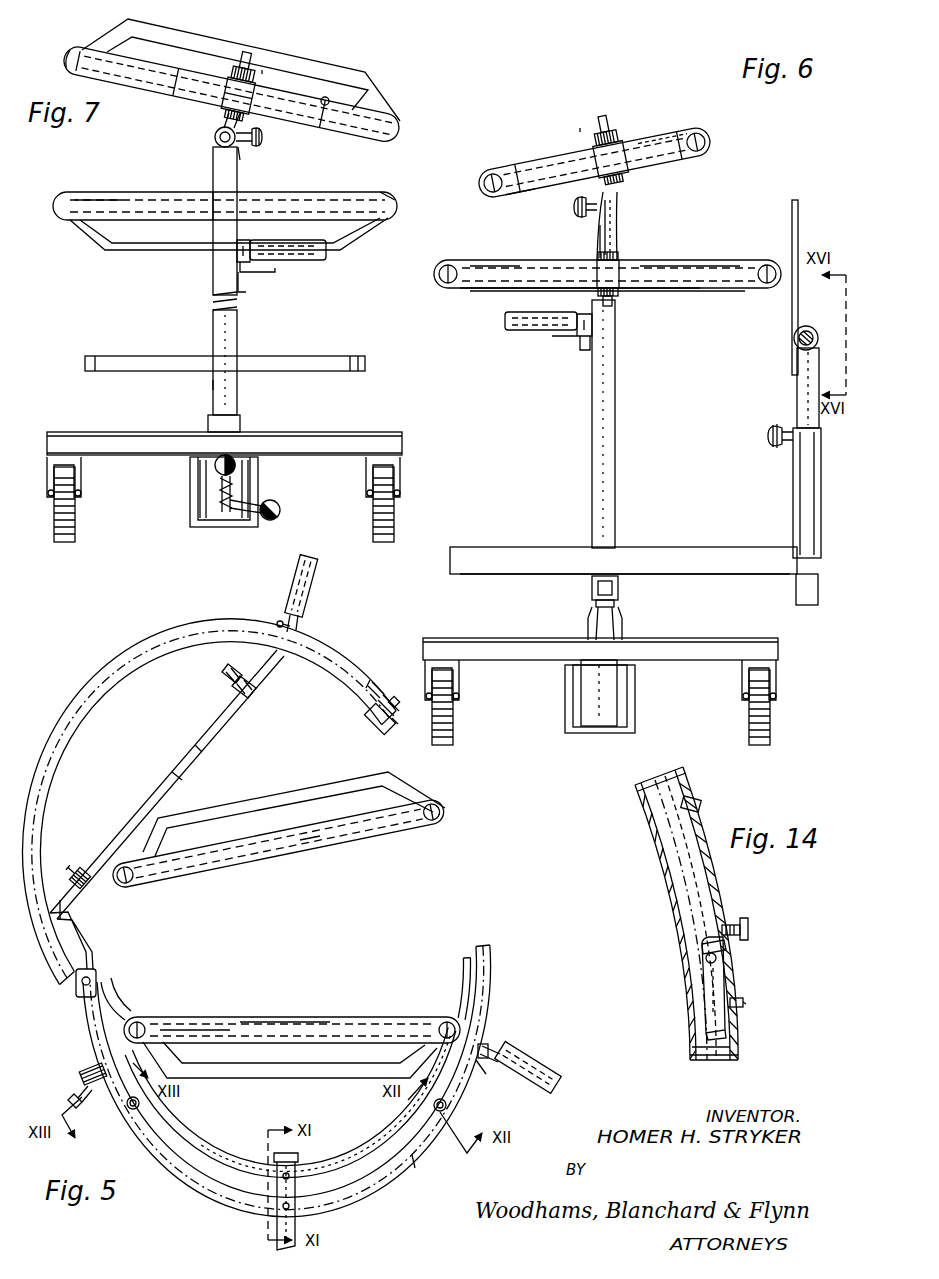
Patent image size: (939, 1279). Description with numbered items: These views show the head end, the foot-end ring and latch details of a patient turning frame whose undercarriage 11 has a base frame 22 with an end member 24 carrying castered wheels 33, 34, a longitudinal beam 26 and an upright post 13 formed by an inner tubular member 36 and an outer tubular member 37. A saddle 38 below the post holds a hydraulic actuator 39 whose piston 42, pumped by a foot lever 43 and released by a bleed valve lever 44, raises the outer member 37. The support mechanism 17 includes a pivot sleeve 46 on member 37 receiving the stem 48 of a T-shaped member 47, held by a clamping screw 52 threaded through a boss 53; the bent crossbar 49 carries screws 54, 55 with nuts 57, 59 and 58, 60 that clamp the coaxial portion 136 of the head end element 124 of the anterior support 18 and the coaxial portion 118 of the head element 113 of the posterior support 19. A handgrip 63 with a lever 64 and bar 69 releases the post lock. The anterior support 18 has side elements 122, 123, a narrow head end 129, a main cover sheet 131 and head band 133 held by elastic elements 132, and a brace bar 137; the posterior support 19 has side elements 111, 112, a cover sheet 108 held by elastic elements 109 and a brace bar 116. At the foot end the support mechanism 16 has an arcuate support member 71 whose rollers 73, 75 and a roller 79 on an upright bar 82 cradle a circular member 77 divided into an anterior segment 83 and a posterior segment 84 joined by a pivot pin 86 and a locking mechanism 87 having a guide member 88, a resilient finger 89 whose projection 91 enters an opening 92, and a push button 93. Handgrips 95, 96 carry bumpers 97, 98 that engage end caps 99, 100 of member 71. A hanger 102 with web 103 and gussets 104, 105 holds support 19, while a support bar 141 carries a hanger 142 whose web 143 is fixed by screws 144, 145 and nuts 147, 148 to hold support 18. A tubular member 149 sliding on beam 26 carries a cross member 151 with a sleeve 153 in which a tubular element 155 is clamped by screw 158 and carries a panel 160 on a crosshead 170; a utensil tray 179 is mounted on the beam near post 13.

In FIG. 7, the undercarriage 11 is at (116, 520).
In FIG. 7, the upright post 13 is at (240, 388).
In FIG. 6, the upright post 13 is at (590, 412).
In FIG. 5, the support mechanism 16 is at (85, 682).
In FIG. 7, the support mechanism 17 is at (264, 72).
In FIG. 6, the support mechanism 17 is at (578, 129).
In FIG. 7, the anterior patient support 18 is at (410, 124).
In FIG. 6, the anterior patient support 18 is at (716, 150).
In FIG. 5, the anterior patient support 18 is at (454, 810).
In FIG. 7, the posterior patient support 19 is at (400, 202).
In FIG. 6, the posterior patient support 19 is at (771, 258).
In FIG. 5, the posterior patient support 19 is at (334, 1016).
In FIG. 7, the base frame 22 is at (332, 431).
In FIG. 6, the base frame 22 is at (481, 634).
In FIG. 7, the end member 24 is at (94, 433).
In FIG. 6, the end member 24 is at (680, 640).
In FIG. 6, the longitudinal beam 26 is at (580, 594).
In FIG. 7, the wheel 33 is at (374, 540).
In FIG. 6, the wheel 33 is at (449, 741).
In FIG. 7, the wheel 34 is at (62, 540).
In FIG. 6, the wheel 34 is at (770, 742).
In FIG. 7, the inner tubular member 36 is at (212, 297).
In FIG. 7, the outer tubular member 37 is at (220, 340).
In FIG. 6, the outer tubular member 37 is at (613, 490).
In FIG. 7, the saddle 38 is at (190, 501).
In FIG. 6, the saddle 38 is at (636, 708).
In FIG. 7, the hydraulic actuator 39 is at (212, 505).
In FIG. 6, the hydraulic actuator 39 is at (598, 712).
In FIG. 6, the piston 42 is at (616, 607).
In FIG. 7, the foot lever 43 is at (220, 458).
In FIG. 7, the bleed valve lever 44 is at (278, 516).
In FIG. 7, the pivot sleeve 46 is at (214, 136).
In FIG. 7, the T-shaped member 47 is at (212, 122).
In FIG. 6, the T-shaped member 47 is at (619, 222).
In FIG. 7, the cylindrical stem 48 is at (216, 143).
In FIG. 6, the tubular crossbar 49 is at (600, 245).
In FIG. 7, the clamping screw 52 is at (262, 140).
In FIG. 6, the clamping screw 52 is at (572, 209).
In FIG. 7, the boss 53 is at (241, 147).
In FIG. 7, the screw 54 is at (242, 60).
In FIG. 6, the screw 54 is at (602, 128).
In FIG. 6, the screw 55 is at (614, 312).
In FIG. 7, the nut 57 is at (252, 79).
In FIG. 6, the nut 57 is at (582, 147).
In FIG. 6, the nut 58 is at (621, 256).
In FIG. 7, the nut 59 is at (222, 101).
In FIG. 6, the nut 59 is at (622, 181).
In FIG. 6, the nut 60 is at (622, 297).
In FIG. 7, the handgrip 63 is at (320, 262).
In FIG. 6, the handgrip 63 is at (520, 322).
In FIG. 7, the lever 64 is at (244, 286).
In FIG. 6, the lever 64 is at (584, 348).
In FIG. 7, the bar 69 is at (272, 270).
In FIG. 6, the bar 69 is at (570, 334).
In FIG. 5, the arcuate tubular support member 71 is at (412, 1158).
In FIG. 5, the roller 73 is at (130, 1110).
In FIG. 5, the roller 75 is at (441, 1114).
In FIG. 5, the circular member 77 is at (498, 971).
In FIG. 5, the roller 79 is at (296, 1158).
In FIG. 5, the upright bar 82 is at (318, 1196).
In FIG. 5, the anterior segment 83 is at (52, 752).
In FIG. 14, the anterior segment 83 is at (642, 796).
In FIG. 5, the posterior segment 84 is at (216, 1156).
In FIG. 14, the posterior segment 84 is at (692, 1044).
In FIG. 5, the pivot pin 86 is at (78, 986).
In FIG. 5, the locking mechanism 87 is at (378, 728).
In FIG. 14, the locking mechanism 87 is at (754, 906).
In FIG. 5, the U-shaped guide member 88 is at (374, 718).
In FIG. 14, the U-shaped guide member 88 is at (707, 980).
In FIG. 5, the resilient finger 89 is at (394, 706).
In FIG. 14, the resilient finger 89 is at (700, 838).
In FIG. 5, the projection 91 is at (395, 704).
In FIG. 14, the projection 91 is at (745, 1001).
In FIG. 14, the opening 92 is at (745, 1007).
In FIG. 5, the push button 93 is at (374, 684).
In FIG. 14, the push button 93 is at (750, 932).
In FIG. 5, the handgrip 95 is at (296, 578).
In FIG. 5, the handgrip 96 is at (552, 1074).
In FIG. 5, the bumper 97 is at (277, 622).
In FIG. 5, the bumper 98 is at (488, 1068).
In FIG. 5, the end cap 99 is at (88, 1070).
In FIG. 5, the end cap 100 is at (482, 1078).
In FIG. 5, the U-shaped hanger 102 is at (204, 1040).
In FIG. 5, the web 103 is at (233, 1046).
In FIG. 5, the gusset 104 is at (113, 1004).
In FIG. 5, the gusset 105 is at (463, 996).
In FIG. 7, the cover sheet 108 is at (392, 216).
In FIG. 6, the cover sheet 108 is at (690, 262).
In FIG. 5, the cover sheet 108 is at (246, 1019).
In FIG. 7, the elastic elements 109 is at (140, 226).
In FIG. 6, the elastic elements 109 is at (700, 290).
In FIG. 6, the side element 111 is at (446, 280).
In FIG. 5, the side element 111 is at (152, 1029).
In FIG. 6, the side element 112 is at (772, 286).
In FIG. 5, the side element 112 is at (442, 1026).
In FIG. 7, the head element 113 is at (118, 206).
In FIG. 6, the head element 113 is at (495, 246).
In FIG. 7, the U-shaped brace bar 116 is at (148, 251).
In FIG. 5, the U-shaped brace bar 116 is at (318, 1070).
In FIG. 7, the coaxial portion 118 is at (210, 206).
In FIG. 6, the coaxial portion 118 is at (603, 273).
In FIG. 6, the side element 122 is at (486, 185).
In FIG. 5, the side element 122 is at (134, 884).
In FIG. 6, the side element 123 is at (684, 142).
In FIG. 5, the side element 123 is at (425, 824).
In FIG. 7, the head end element 124 is at (328, 100).
In FIG. 6, the head end element 124 is at (678, 156).
In FIG. 7, the head end 129 is at (362, 118).
In FIG. 6, the head end 129 is at (718, 136).
In FIG. 7, the main cover sheet 131 is at (70, 61).
In FIG. 5, the main cover sheet 131 is at (312, 848).
In FIG. 7, the elastic elements 132 is at (130, 49).
In FIG. 6, the elastic elements 132 is at (522, 160).
In FIG. 6, the head band 133 is at (530, 194).
In FIG. 7, the coaxial portion 136 is at (252, 101).
In FIG. 6, the coaxial portion 136 is at (617, 157).
In FIG. 7, the U-shaped brace bar 137 is at (305, 35).
In FIG. 5, the U-shaped brace bar 137 is at (288, 775).
In FIG. 5, the support bar 141 is at (182, 748).
In FIG. 5, the U-shaped hanger 142 is at (216, 724).
In FIG. 5, the web 143 is at (200, 748).
In FIG. 5, the screw 144 is at (74, 860).
In FIG. 5, the screw 145 is at (226, 670).
In FIG. 5, the nut 147 is at (78, 908).
In FIG. 5, the nut 148 is at (236, 686).
In FIG. 6, the tubular member 149 is at (621, 590).
In FIG. 6, the cross member 151 is at (553, 548).
In FIG. 6, the upstanding sleeve 153 is at (795, 511).
In FIG. 6, the tubular element 155 is at (800, 406).
In FIG. 6, the clamp screw 158 is at (767, 445).
In FIG. 6, the panel 160 is at (800, 206).
In FIG. 6, the crosshead 170 is at (811, 328).
In FIG. 7, the utensil tray 179 is at (85, 362).